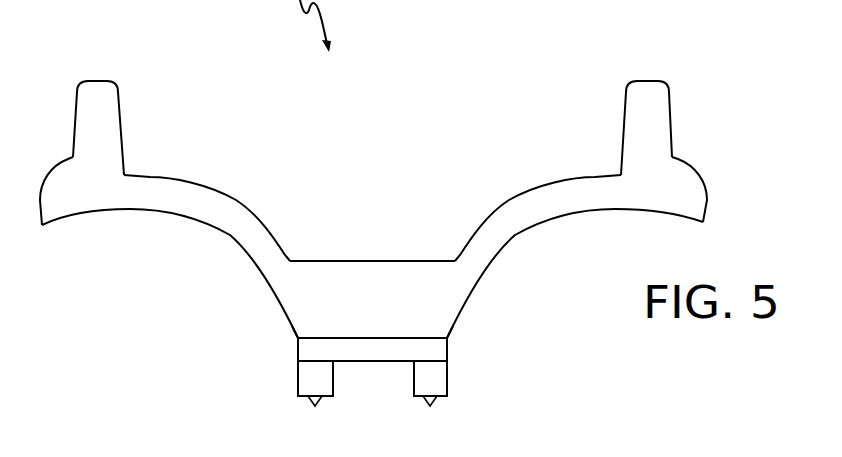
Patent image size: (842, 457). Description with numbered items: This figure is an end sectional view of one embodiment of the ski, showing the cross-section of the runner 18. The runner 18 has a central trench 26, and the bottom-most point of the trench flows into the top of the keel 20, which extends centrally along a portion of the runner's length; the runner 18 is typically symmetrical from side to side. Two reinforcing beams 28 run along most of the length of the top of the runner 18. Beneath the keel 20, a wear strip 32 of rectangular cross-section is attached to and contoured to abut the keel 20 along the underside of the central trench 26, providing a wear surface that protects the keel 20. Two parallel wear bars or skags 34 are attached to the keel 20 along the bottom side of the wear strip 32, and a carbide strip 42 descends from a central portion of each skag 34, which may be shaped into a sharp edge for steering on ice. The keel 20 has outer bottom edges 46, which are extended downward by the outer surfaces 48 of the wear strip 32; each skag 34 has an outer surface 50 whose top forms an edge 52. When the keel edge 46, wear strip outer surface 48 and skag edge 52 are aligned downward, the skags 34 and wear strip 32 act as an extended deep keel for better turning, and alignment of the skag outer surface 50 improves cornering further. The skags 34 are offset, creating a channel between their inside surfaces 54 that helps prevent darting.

The runner 18 is at (528, 200).
The keel 20 is at (342, 305).
The central trench 26 is at (381, 260).
The reinforcing beams 28 is at (96, 87).
The wear strip 32 is at (398, 337).
The skags 34 is at (300, 397).
The carbide strip 42 is at (316, 407).
The outer bottom edges of the keel 46 is at (297, 338).
The outer surfaces of the wear strip 48 is at (297, 350).
The skag outer surface 50 is at (297, 376).
The skag edge 52 is at (297, 361).
The inside surfaces of the skags 54 is at (414, 378).